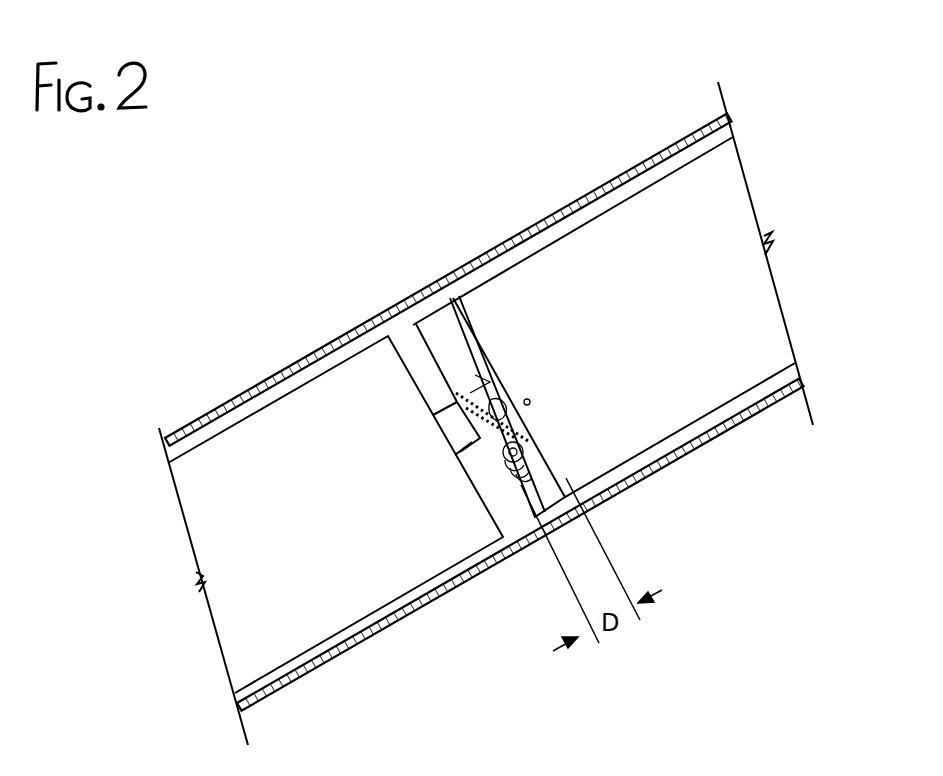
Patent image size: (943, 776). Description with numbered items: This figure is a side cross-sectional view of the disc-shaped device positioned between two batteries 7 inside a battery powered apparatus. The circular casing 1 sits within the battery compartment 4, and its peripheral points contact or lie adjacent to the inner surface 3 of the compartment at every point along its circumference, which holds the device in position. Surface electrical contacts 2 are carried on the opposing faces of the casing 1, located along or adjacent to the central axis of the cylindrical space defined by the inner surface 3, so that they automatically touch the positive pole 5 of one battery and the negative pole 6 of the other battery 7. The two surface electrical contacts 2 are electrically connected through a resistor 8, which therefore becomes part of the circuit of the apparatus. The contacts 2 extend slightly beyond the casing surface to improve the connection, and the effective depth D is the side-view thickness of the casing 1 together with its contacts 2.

The casing 1 is at (405, 310).
The surface electrical contacts 2 is at (458, 392).
The inner surface 3 is at (618, 200).
The battery compartment 4 is at (240, 400).
The positive pole 5 is at (476, 455).
The negative pole 6 is at (437, 310).
The batteries 7 is at (723, 217).
The resistor 8 is at (527, 400).